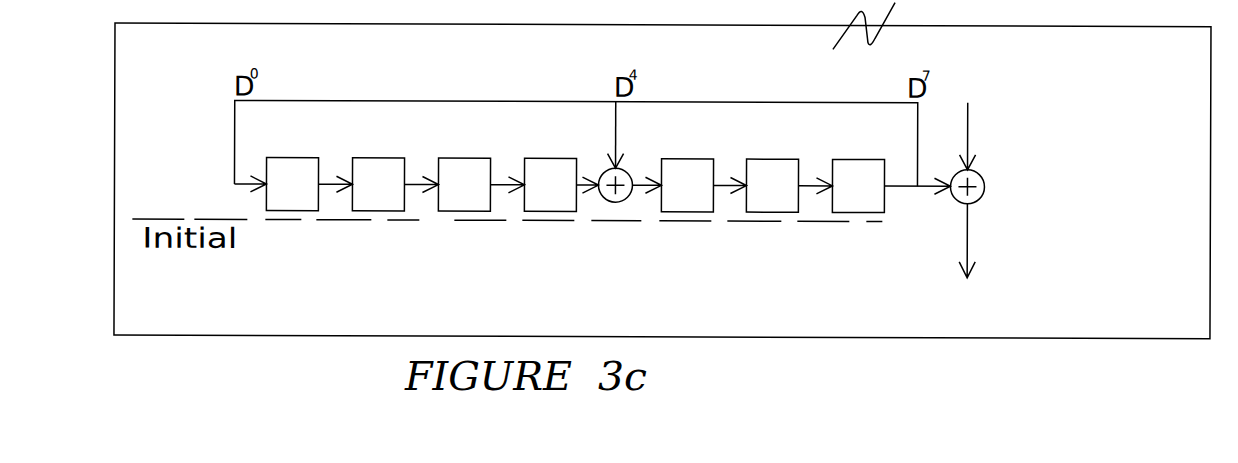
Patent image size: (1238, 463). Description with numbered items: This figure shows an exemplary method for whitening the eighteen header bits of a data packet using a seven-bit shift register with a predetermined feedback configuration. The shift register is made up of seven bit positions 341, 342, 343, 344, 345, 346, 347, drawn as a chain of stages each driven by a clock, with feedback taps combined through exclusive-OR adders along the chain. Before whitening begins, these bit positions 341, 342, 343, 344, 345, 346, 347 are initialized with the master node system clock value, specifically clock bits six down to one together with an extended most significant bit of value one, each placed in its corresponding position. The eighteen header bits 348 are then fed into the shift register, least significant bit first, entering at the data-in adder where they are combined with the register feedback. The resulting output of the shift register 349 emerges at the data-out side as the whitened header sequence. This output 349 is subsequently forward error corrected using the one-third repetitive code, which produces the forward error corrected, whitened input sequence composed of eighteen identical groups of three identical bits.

The shift register bit position 341 is at (265, 210).
The shift register bit position 342 is at (351, 210).
The shift register bit position 343 is at (437, 210).
The shift register bit position 344 is at (523, 210).
The shift register bit position 345 is at (660, 210).
The shift register bit position 346 is at (745, 210).
The shift register bit position 347 is at (831, 210).
The header bits 348 is at (982, 117).
The shift register output 349 is at (980, 219).